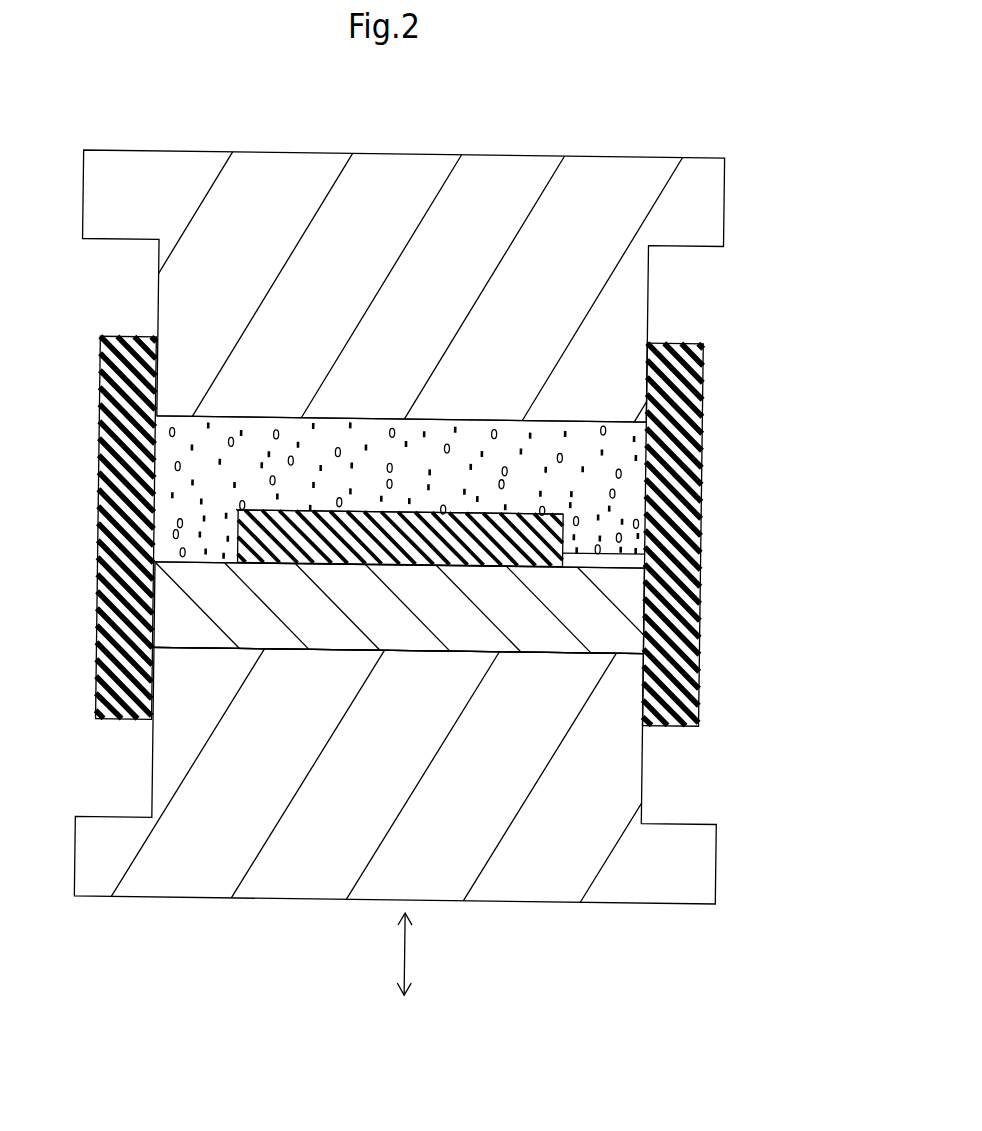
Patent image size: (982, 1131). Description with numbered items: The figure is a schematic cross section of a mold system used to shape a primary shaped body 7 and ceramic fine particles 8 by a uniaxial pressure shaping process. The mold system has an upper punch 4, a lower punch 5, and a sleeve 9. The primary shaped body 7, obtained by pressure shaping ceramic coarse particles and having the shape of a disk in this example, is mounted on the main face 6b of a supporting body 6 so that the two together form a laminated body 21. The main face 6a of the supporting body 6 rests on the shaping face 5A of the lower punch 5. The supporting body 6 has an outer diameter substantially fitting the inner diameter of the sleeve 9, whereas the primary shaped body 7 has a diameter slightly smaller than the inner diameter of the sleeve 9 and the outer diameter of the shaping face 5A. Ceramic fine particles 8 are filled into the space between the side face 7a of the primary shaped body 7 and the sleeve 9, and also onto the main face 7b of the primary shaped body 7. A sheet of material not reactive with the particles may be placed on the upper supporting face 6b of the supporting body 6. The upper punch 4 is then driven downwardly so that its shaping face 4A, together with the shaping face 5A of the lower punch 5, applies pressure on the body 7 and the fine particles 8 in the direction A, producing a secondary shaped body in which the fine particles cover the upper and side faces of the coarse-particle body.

The upper punch 4 is at (734, 198).
The shaping face of the upper punch 4A is at (426, 419).
The lower punch 5 is at (663, 776).
The shaping face of the lower punch 5A is at (539, 651).
The supporting body 6 is at (608, 632).
The main face of the supporting body 6a is at (425, 653).
The main face of the supporting body 6b is at (332, 561).
The primary shaped body 7 is at (266, 529).
The side face of the primary shaped body 7a is at (648, 548).
The main face of the primary shaped body 7b is at (479, 512).
The ceramic fine particles 8 is at (170, 443).
The sleeve 9 is at (674, 449).
The laminated body 21 is at (236, 511).
The direction A is at (410, 950).